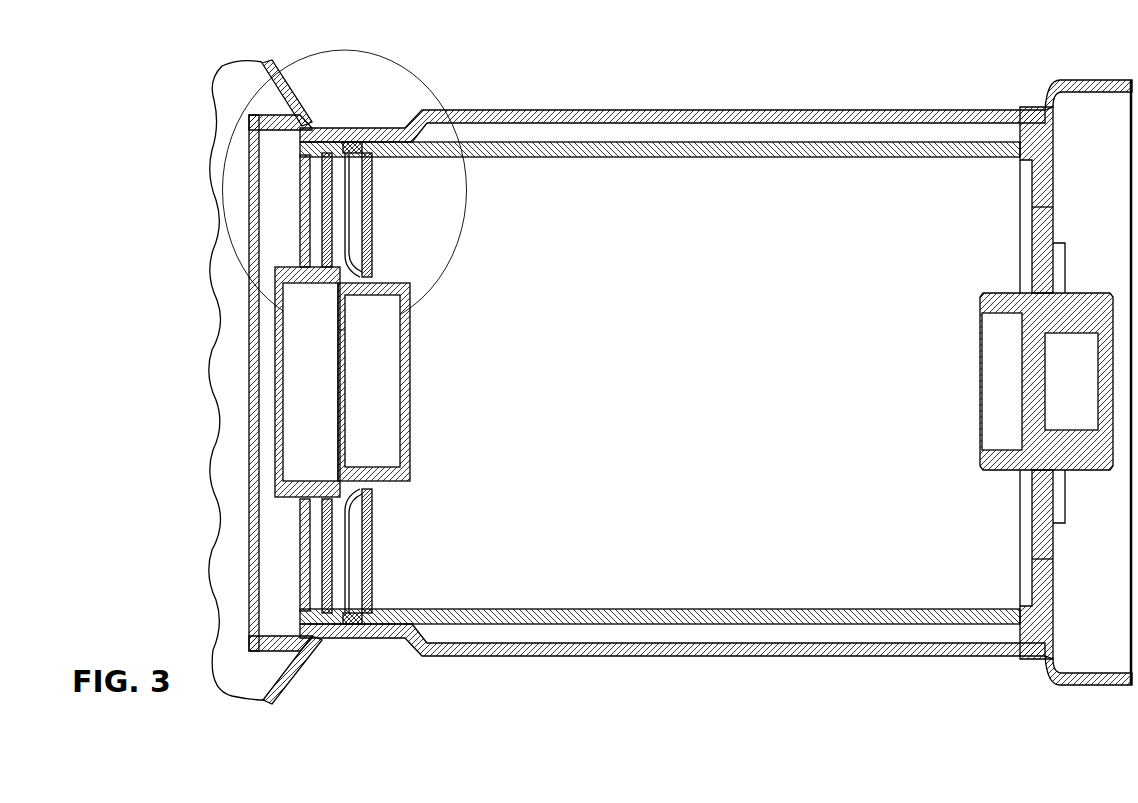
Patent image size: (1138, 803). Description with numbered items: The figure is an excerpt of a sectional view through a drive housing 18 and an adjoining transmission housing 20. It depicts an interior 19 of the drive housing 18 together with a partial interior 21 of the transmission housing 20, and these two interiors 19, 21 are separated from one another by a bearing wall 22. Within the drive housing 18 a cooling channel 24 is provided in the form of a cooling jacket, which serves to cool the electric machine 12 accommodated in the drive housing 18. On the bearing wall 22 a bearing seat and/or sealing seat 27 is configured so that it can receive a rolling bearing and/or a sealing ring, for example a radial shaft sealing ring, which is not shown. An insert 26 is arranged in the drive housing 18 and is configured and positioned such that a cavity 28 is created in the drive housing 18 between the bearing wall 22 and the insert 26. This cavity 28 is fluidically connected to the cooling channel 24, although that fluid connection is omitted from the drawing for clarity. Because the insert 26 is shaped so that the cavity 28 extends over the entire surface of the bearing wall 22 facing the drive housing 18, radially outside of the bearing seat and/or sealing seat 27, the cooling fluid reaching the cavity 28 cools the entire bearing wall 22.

The electric machine 12 is at (803, 92).
The drive housing 18 is at (722, 95).
The interior 19 is at (555, 188).
The transmission housing 20 is at (190, 152).
The partial interior 21 is at (191, 342).
The bearing wall 22 is at (322, 548).
The cooling channel 24 is at (622, 130).
The insert 26 is at (340, 548).
The bearing seat and/or sealing seat 27 is at (378, 388).
The cavity 28 is at (330, 632).